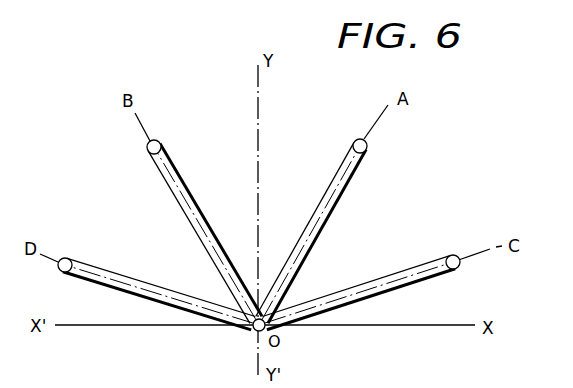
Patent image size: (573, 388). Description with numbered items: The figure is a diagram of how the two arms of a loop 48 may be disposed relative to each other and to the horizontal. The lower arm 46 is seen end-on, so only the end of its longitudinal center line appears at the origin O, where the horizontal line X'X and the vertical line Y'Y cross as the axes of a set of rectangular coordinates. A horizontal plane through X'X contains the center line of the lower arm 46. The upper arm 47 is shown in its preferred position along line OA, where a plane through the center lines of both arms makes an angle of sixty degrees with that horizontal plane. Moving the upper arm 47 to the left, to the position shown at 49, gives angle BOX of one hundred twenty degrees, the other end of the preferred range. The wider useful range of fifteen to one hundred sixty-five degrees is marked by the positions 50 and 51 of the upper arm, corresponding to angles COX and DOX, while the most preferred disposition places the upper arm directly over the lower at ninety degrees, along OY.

The lower arm 46 is at (253, 331).
The upper arm 47 is at (367, 147).
The loop 48 is at (345, 192).
The position of upper arm 49 is at (160, 143).
The position of upper arm 50 is at (453, 254).
The position of upper arm 51 is at (68, 257).